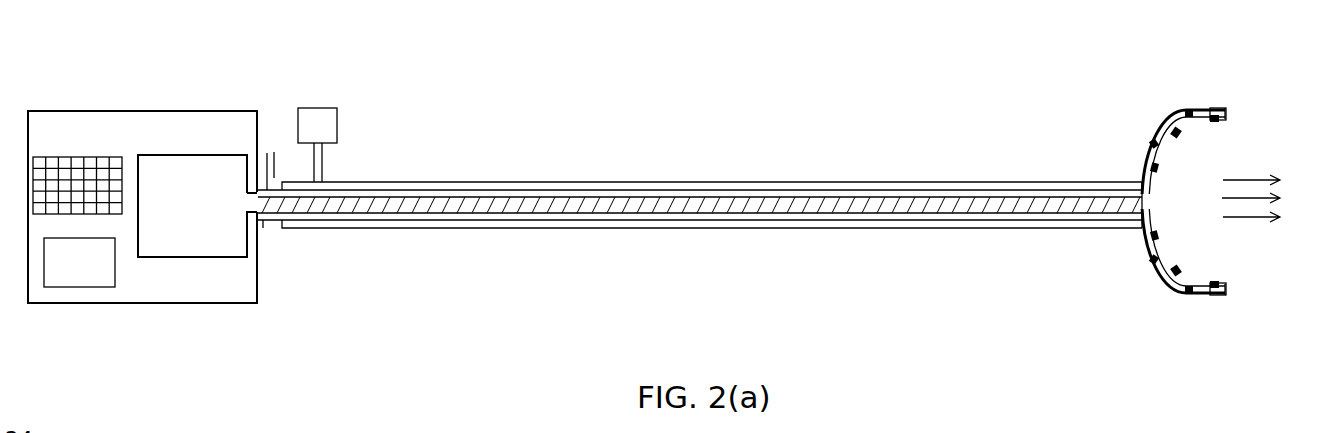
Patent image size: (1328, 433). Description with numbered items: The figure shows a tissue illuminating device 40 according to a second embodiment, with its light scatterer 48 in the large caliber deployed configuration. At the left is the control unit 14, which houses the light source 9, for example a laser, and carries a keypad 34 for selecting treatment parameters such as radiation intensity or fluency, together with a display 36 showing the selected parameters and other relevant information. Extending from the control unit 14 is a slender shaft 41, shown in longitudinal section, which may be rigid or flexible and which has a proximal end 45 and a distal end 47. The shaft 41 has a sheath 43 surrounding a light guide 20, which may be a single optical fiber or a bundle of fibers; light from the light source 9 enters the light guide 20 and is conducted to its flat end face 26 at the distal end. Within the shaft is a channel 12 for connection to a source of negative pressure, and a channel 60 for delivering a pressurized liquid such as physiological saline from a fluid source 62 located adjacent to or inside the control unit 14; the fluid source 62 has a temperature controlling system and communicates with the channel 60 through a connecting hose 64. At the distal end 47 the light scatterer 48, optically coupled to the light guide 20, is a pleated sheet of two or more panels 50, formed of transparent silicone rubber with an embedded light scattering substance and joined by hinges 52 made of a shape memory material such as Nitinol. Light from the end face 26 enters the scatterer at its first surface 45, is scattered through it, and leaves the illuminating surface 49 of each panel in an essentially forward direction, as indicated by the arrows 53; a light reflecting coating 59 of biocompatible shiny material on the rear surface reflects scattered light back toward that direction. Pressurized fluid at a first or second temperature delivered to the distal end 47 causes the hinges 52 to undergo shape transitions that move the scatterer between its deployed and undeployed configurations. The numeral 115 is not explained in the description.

The light source 9 is at (195, 250).
The channel 12 is at (405, 192).
The control unit 14 is at (185, 111).
The light guide 20 is at (577, 207).
The end face 26 is at (1140, 228).
The keypad 34 is at (72, 157).
The display 36 is at (77, 270).
The tissue illuminating device 40 is at (814, 142).
The shaft 41 is at (728, 158).
The sheath 43 is at (854, 193).
The proximal end / first surface 45 is at (1150, 198).
The distal end 47 is at (1130, 190).
The light scatterer 48 is at (1224, 108).
The illuminating surface 49 is at (1225, 120).
The panels 50 is at (1158, 170).
The hinges 52 is at (1155, 140).
The arrows 53 is at (1261, 178).
The light reflecting coating 59 is at (1149, 162).
The channel 60 is at (501, 186).
The fluid source 62 is at (317, 127).
The connecting hose 64 is at (318, 160).
The strain relief 115 is at (263, 222).